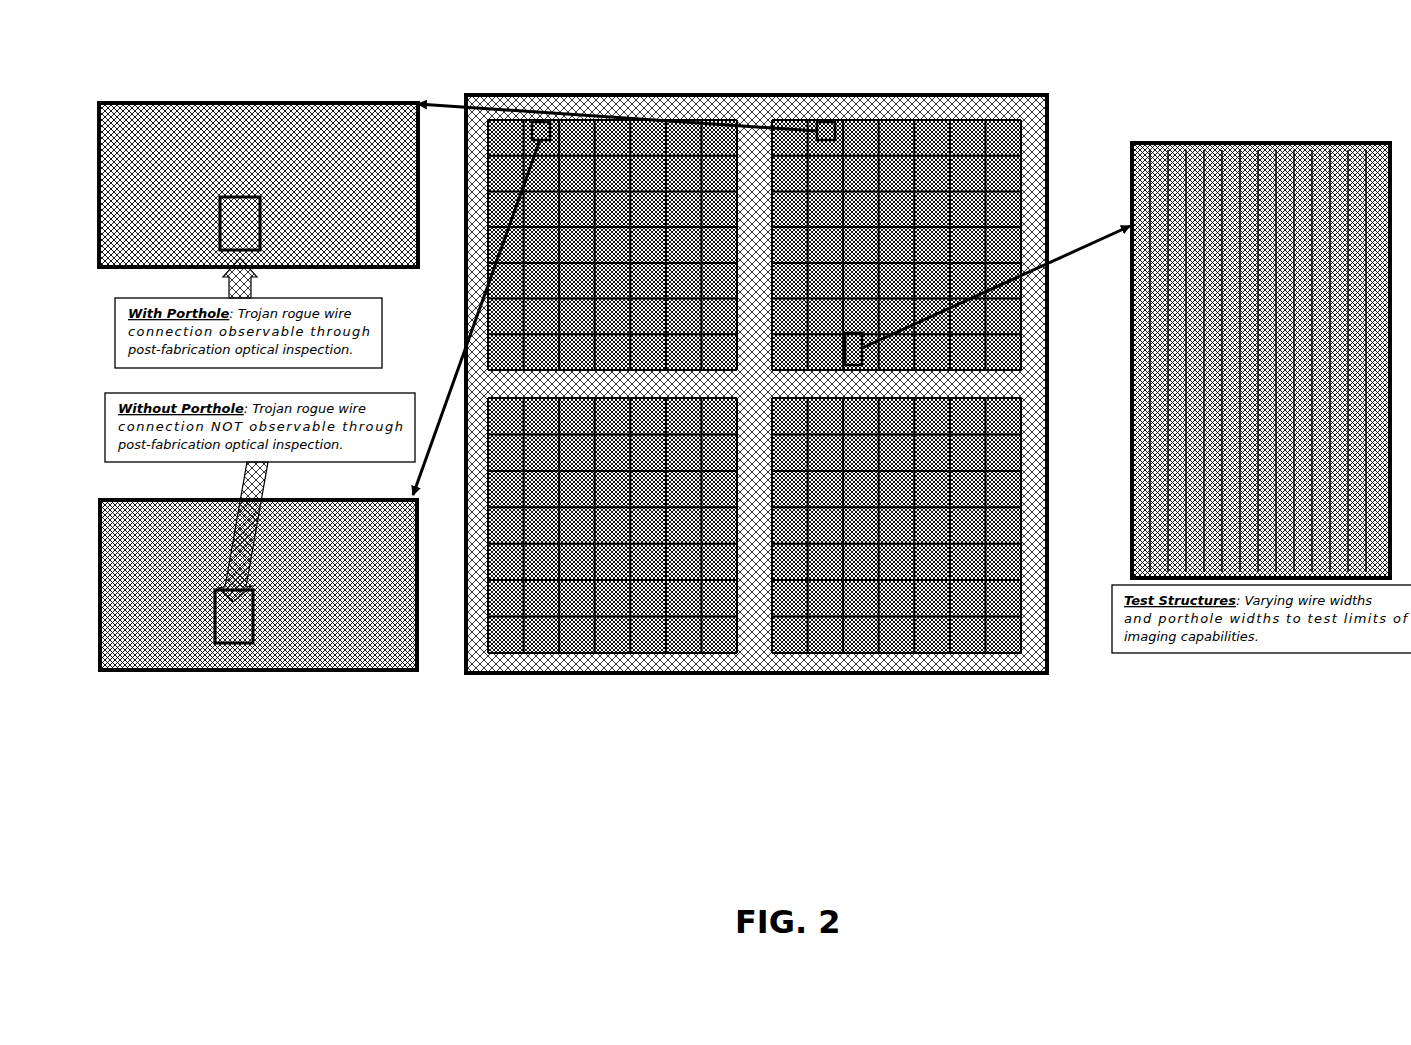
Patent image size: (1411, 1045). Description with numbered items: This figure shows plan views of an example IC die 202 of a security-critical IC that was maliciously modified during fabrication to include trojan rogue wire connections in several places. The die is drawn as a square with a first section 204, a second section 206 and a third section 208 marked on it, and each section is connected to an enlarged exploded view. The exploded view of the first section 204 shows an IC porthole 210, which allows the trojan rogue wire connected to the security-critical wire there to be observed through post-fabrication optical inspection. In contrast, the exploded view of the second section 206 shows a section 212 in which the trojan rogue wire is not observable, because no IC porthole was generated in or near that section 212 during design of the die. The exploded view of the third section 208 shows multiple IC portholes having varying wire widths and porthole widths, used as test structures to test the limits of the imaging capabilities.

The IC die 202 is at (927, 97).
The first section 204 is at (837, 120).
The second section 206 is at (543, 122).
The third section 208 is at (862, 333).
The IC porthole 210 is at (247, 197).
The section 212 is at (240, 645).